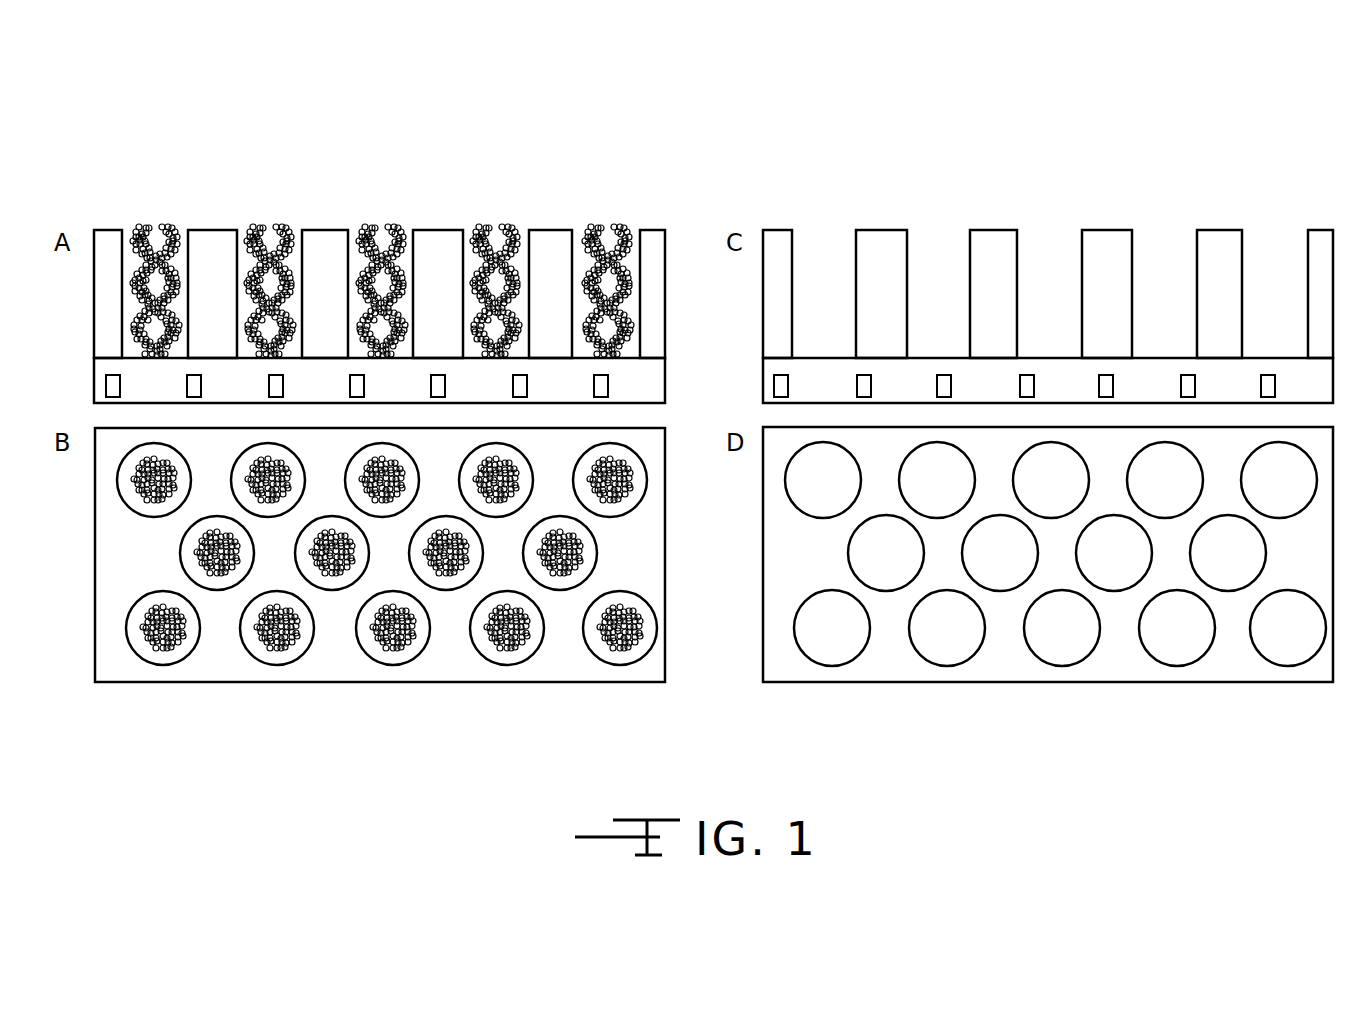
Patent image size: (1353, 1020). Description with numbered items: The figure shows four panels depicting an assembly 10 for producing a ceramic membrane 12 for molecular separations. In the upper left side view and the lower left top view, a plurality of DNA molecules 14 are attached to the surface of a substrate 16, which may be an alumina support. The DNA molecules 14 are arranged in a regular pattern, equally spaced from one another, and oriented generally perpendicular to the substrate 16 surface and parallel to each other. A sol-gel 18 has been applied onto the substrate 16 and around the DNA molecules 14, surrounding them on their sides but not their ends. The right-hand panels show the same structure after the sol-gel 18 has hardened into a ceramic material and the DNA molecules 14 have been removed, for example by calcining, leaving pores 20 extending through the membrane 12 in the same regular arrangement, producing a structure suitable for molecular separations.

The assembly 10 is at (145, 161).
The ceramic membrane 12 is at (1112, 245).
The DNA molecules 14 is at (270, 227).
The substrate 16 is at (652, 380).
The sol-gel 18 is at (452, 227).
The pores 20 is at (793, 272).